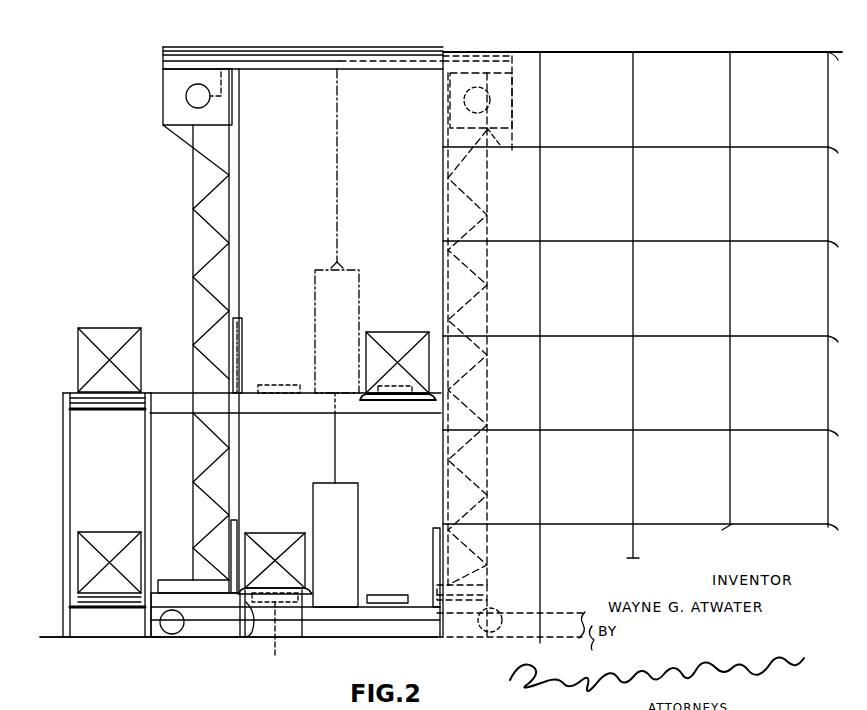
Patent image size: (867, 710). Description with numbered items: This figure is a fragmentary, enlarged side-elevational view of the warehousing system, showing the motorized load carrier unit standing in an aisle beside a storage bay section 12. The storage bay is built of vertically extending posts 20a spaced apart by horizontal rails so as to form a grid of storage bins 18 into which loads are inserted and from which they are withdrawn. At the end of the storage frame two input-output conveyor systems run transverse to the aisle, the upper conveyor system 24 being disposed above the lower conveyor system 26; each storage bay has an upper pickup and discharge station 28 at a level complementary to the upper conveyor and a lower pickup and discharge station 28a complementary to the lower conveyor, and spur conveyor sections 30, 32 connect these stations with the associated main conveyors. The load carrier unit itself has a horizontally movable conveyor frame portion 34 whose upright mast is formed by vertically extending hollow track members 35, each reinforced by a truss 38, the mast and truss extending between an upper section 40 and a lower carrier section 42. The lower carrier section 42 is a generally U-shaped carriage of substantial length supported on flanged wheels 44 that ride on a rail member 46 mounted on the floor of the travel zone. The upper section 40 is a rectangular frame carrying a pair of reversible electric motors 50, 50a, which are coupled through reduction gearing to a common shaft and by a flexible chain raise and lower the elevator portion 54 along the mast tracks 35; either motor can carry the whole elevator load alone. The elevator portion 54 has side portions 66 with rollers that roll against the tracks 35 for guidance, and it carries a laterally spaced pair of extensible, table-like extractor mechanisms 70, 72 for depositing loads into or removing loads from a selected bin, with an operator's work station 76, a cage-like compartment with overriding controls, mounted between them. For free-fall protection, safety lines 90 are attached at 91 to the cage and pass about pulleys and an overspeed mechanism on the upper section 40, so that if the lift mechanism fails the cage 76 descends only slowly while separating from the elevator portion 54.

The storage bay section 12 is at (744, 51).
The storage bin 18 is at (642, 66).
The post 20a is at (540, 376).
The input-output conveyor system 24 is at (62, 384).
The input-output conveyor system 26 is at (100, 620).
The pickup and discharge station 28 is at (398, 402).
The pickup and discharge station 28a is at (246, 637).
The spur conveyor section 30 is at (282, 412).
The spur conveyor section 32 is at (206, 600).
The conveyor frame portion 34 is at (242, 138).
The track member 35 is at (240, 260).
The truss 38 is at (212, 232).
The upper section 40 is at (382, 66).
The lower carrier section 42 is at (380, 637).
The flanged wheel 44 is at (170, 636).
The rail member 46 is at (554, 636).
The reversible electric motor 50 is at (481, 92).
The reversible electric motor 50a is at (187, 96).
The elevator portion 54 is at (243, 354).
The side portion 66 is at (238, 528).
The extractor mechanism 70 is at (370, 380).
The extractor mechanism 72 is at (270, 385).
The operator's work station 76 is at (360, 296).
The safety line 90 is at (340, 148).
The attachment 91 is at (336, 477).